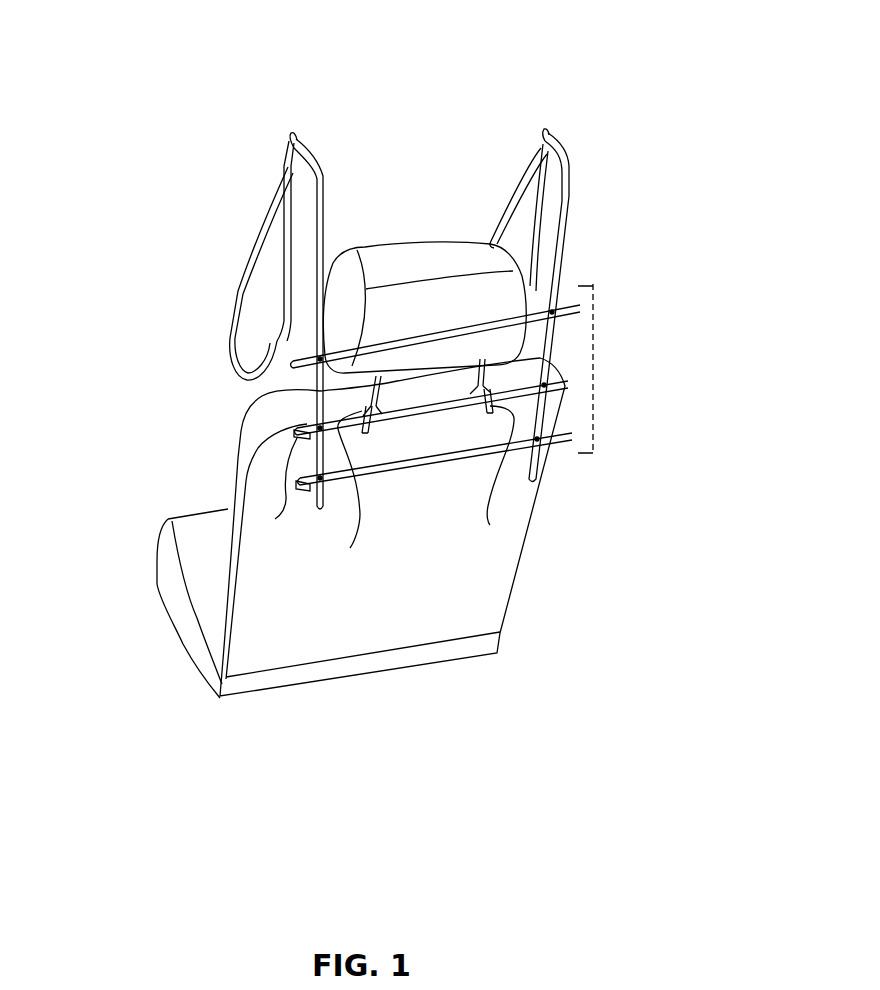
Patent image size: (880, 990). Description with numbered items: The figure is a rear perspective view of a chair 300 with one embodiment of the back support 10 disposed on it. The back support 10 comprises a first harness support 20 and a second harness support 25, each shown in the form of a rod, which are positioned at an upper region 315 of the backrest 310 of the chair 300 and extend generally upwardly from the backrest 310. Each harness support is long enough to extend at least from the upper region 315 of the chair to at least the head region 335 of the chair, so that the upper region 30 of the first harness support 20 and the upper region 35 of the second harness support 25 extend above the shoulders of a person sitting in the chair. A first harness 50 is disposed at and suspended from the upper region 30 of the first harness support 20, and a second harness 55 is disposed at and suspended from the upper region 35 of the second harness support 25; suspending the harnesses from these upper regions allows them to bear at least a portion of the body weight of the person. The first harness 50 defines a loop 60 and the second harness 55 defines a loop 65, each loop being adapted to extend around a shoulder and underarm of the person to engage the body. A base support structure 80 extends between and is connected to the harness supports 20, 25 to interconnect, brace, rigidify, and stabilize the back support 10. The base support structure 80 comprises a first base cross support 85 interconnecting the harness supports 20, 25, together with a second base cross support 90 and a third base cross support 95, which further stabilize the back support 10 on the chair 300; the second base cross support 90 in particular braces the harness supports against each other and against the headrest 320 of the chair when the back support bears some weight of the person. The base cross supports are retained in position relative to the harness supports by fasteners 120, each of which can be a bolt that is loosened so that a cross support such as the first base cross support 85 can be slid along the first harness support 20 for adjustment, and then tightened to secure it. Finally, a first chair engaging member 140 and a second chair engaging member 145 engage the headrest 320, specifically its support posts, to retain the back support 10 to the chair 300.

The back support 10 is at (617, 180).
The first harness support 20 is at (323, 233).
The second harness support 25 is at (568, 200).
The upper region of first harness support 30 is at (308, 147).
The upper region of second harness support 35 is at (553, 145).
The first harness 50 is at (263, 224).
The second harness 55 is at (530, 167).
The loop 60 is at (230, 330).
The loop 65 is at (513, 217).
The base support structure 80 is at (593, 367).
The first base cross support 85 is at (423, 410).
The second base cross support 90 is at (433, 330).
The third base cross support 95 is at (423, 460).
The fastener 120 is at (307, 481).
The first chair engaging member 140 is at (351, 492).
The second chair engaging member 145 is at (493, 478).
The chair 300 is at (237, 687).
The backrest 310 is at (225, 583).
The upper region of backrest 315 is at (217, 440).
The headrest 320 is at (445, 273).
The head region 335 is at (577, 226).